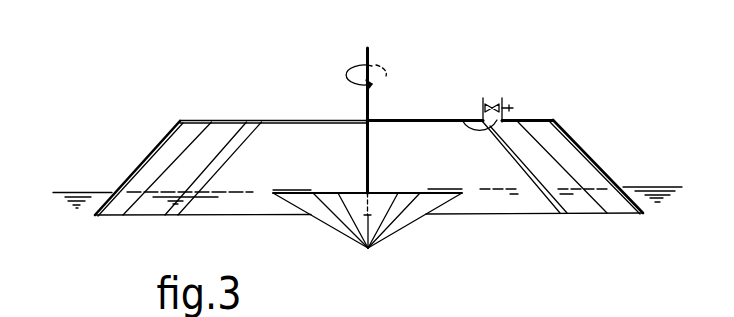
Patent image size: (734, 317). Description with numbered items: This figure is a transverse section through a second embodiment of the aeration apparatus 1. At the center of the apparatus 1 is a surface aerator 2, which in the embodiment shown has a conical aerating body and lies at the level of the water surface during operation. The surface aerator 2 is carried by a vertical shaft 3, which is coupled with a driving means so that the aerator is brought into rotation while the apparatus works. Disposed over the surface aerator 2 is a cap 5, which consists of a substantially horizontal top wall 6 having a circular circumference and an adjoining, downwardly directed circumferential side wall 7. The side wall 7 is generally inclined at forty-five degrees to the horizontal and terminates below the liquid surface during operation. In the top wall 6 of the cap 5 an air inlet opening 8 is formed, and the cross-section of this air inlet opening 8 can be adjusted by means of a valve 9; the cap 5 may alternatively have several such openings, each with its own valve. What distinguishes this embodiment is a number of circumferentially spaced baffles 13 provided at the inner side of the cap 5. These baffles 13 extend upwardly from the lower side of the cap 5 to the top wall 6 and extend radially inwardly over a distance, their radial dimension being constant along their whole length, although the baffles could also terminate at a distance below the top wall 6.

The apparatus 1 is at (268, 118).
The surface aerator 2 is at (408, 218).
The vertical shaft 3 is at (366, 105).
The cap 5 is at (532, 112).
The top wall 6 is at (417, 118).
The side wall 7 is at (165, 137).
The air inlet opening 8 is at (462, 120).
The valve 9 is at (490, 107).
The baffles 13 is at (222, 140).